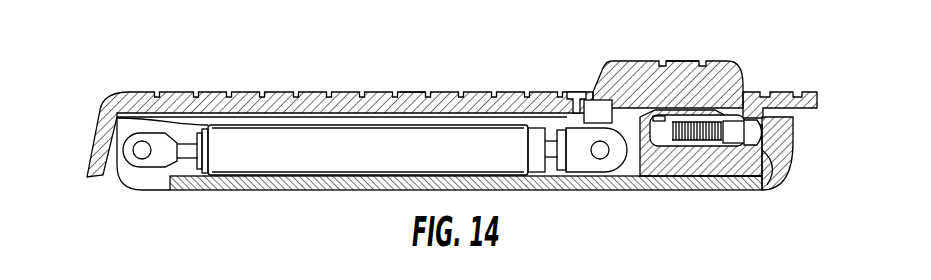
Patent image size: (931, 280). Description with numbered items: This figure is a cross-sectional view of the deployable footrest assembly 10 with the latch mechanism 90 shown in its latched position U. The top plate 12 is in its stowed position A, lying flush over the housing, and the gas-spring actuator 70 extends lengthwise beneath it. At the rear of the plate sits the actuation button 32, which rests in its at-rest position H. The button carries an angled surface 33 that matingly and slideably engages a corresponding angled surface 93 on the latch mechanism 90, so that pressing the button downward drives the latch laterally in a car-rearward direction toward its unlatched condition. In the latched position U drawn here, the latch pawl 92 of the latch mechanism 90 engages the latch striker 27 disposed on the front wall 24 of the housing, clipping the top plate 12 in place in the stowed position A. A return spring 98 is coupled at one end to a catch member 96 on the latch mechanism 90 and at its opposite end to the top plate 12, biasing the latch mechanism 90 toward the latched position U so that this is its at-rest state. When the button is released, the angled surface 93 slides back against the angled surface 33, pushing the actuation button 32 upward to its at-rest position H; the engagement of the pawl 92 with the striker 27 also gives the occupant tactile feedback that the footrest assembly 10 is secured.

The deployable footrest assembly 10 is at (460, 134).
The top plate 12 is at (465, 88).
The stowed position A is at (415, 92).
The at-rest position H is at (673, 60).
The actuation button 32 is at (717, 60).
The angled surface 33 is at (752, 90).
The front wall 24 is at (793, 126).
The latch striker 27 is at (772, 170).
The actuator 70 is at (286, 160).
The latch mechanism 90 is at (693, 187).
The catch member 96 is at (662, 150).
The return spring 98 is at (684, 148).
The angled surface 93 is at (717, 150).
The latch pawl 92 is at (761, 150).
The latched position U is at (730, 168).